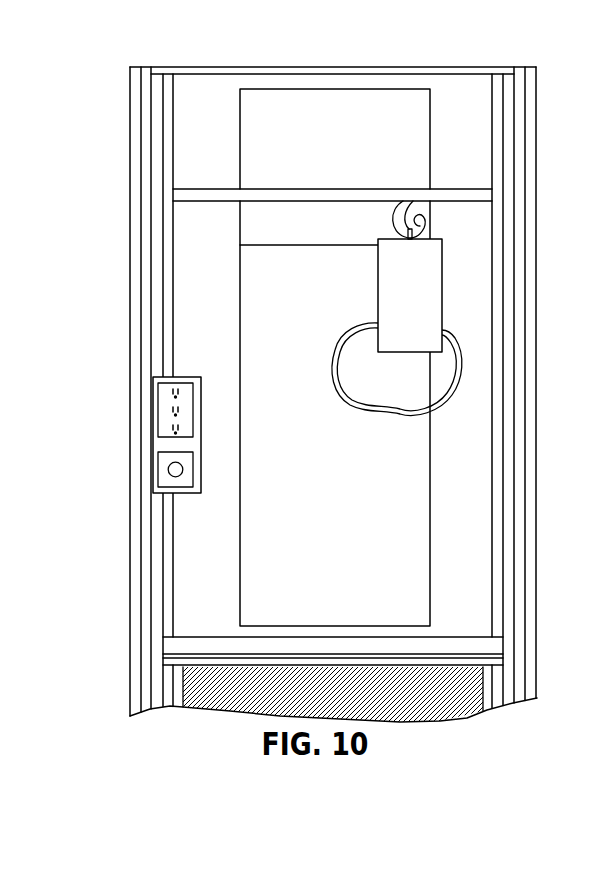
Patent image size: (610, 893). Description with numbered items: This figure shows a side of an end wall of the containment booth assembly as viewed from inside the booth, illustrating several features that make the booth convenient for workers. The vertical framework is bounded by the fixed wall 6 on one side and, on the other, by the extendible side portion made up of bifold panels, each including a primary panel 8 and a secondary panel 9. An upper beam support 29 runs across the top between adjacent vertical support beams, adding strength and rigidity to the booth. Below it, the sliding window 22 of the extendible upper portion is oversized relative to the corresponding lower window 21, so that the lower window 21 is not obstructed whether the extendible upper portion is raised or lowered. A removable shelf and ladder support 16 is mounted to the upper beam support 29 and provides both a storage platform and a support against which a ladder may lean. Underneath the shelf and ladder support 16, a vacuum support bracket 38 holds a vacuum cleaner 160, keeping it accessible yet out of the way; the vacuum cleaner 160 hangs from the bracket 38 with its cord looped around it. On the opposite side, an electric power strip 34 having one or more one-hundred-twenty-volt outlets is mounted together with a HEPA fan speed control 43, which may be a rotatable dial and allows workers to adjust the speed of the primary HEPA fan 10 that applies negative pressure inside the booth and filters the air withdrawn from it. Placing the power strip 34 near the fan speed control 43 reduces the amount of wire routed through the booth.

The fixed wall 6 is at (525, 135).
The primary panel 8 is at (145, 108).
The secondary panel 9 is at (134, 143).
The primary HEPA fan 10 is at (466, 731).
The removable shelf and ladder support 16 is at (465, 201).
The lower window 21 is at (335, 142).
The sliding window 22 is at (429, 498).
The upper beam support 29 is at (184, 66).
The electric power strip 34 is at (157, 413).
The vacuum support bracket 38 is at (430, 228).
The HEPA fan speed control 43 is at (157, 468).
The vacuum cleaner 160 is at (455, 388).